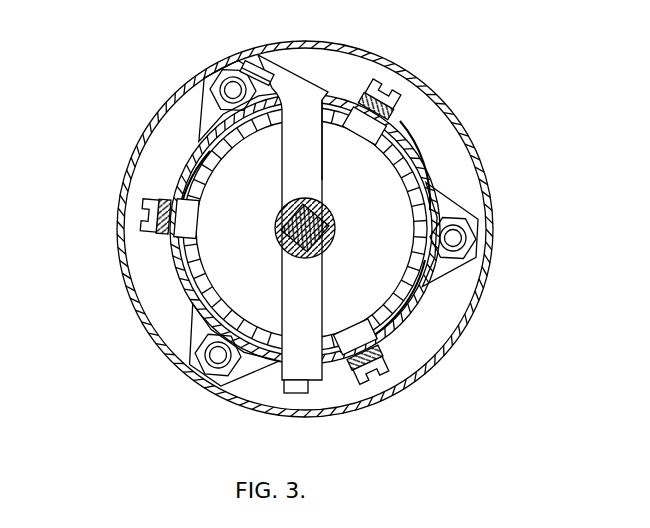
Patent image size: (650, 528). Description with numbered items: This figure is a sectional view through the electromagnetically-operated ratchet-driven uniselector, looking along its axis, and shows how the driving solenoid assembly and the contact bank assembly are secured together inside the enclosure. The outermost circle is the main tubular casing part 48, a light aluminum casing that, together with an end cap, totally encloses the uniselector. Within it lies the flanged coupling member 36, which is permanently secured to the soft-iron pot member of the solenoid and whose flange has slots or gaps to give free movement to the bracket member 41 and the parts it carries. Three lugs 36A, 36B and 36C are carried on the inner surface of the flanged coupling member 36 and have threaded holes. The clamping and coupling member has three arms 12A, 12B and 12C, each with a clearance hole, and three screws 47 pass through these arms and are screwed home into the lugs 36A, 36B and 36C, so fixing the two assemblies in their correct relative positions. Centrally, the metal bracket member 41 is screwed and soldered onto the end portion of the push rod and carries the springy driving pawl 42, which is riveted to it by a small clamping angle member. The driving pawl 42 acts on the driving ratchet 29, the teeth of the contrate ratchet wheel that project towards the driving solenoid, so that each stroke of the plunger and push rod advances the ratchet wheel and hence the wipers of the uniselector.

The main tubular casing part 48 is at (218, 62).
The driving ratchet 29 is at (420, 207).
The flanged coupling member 36 is at (413, 313).
The lug 36A is at (175, 262).
The lug 36B is at (375, 137).
The lug 36C is at (342, 384).
The arm of clamping and coupling member 12A is at (180, 232).
The arm of clamping and coupling member 12B is at (400, 118).
The arm of clamping and coupling member 12C is at (392, 345).
The screw 47 is at (150, 222).
The bracket member 41 is at (297, 148).
The driving pawl 42 is at (335, 125).